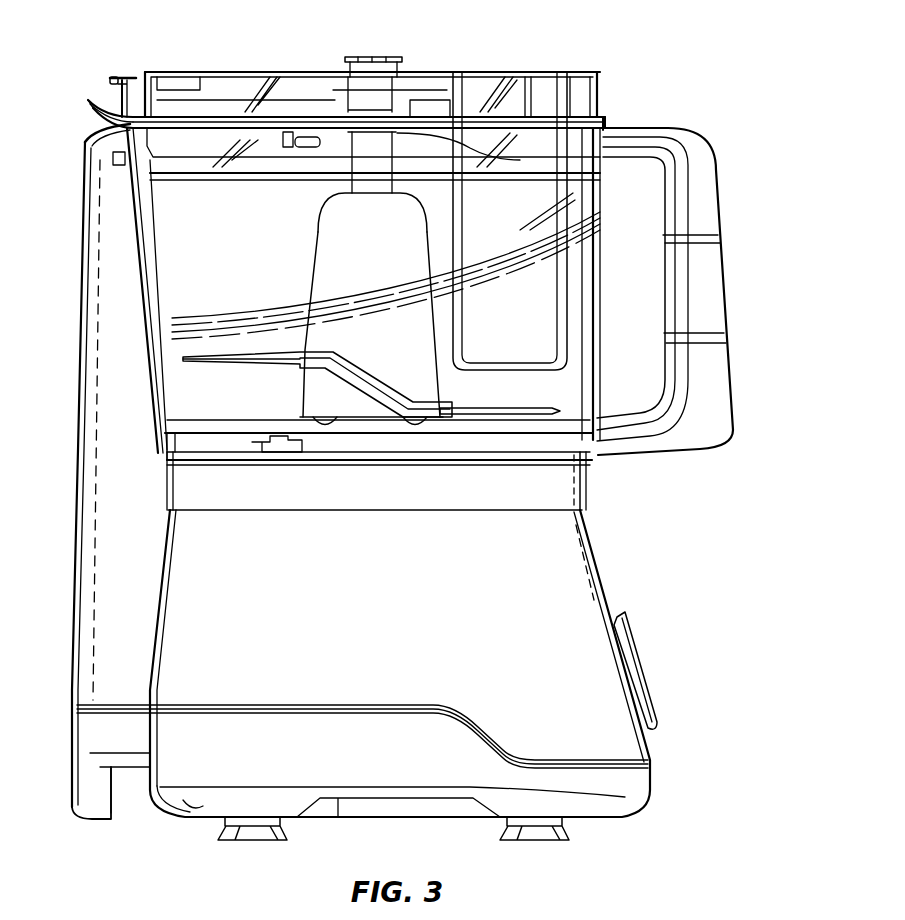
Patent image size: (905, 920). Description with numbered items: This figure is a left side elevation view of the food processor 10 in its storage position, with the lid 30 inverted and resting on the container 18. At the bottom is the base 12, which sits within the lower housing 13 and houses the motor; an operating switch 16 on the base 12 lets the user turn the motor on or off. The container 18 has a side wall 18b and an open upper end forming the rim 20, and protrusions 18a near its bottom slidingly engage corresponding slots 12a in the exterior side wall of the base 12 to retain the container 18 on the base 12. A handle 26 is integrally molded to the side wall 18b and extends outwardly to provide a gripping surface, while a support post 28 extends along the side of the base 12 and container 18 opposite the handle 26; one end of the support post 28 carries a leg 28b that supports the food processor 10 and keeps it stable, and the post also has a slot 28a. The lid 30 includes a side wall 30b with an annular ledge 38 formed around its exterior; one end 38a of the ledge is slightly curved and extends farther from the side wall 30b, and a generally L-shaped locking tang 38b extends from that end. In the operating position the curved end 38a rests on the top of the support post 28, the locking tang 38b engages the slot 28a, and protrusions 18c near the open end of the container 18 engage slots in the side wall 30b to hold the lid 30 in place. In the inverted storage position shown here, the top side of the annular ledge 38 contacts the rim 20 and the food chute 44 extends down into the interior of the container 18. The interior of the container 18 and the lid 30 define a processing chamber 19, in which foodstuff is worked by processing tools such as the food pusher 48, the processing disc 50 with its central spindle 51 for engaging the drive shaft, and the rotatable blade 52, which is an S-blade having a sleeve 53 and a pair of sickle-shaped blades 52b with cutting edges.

The food processor 10 is at (576, 44).
The base 12 is at (560, 555).
The slots 12a is at (300, 462).
The lower housing 13 is at (645, 786).
The operating switch 16 is at (646, 702).
The container 18 is at (172, 240).
The protrusions 18a is at (256, 445).
The side wall 18b is at (172, 267).
The protrusions 18c is at (290, 130).
The processing chamber 19 is at (172, 210).
The rim 20 is at (605, 128).
The handle 26 is at (723, 280).
The support post 28 is at (72, 590).
The slot 28a is at (112, 160).
The leg 28b is at (90, 793).
The lid 30 is at (177, 103).
The side wall 30b is at (600, 100).
The annular ledge 38 is at (118, 108).
The end of the annular ledge 38a is at (98, 119).
The locking tang 38b is at (122, 77).
The food chute 44 is at (568, 316).
The food pusher 48 is at (548, 283).
The processing disc 50 is at (410, 87).
The central spindle 51 is at (373, 57).
The rotatable blade 52 is at (323, 280).
The sickle-shaped blades 52b is at (215, 348).
The sleeve 53 is at (413, 333).